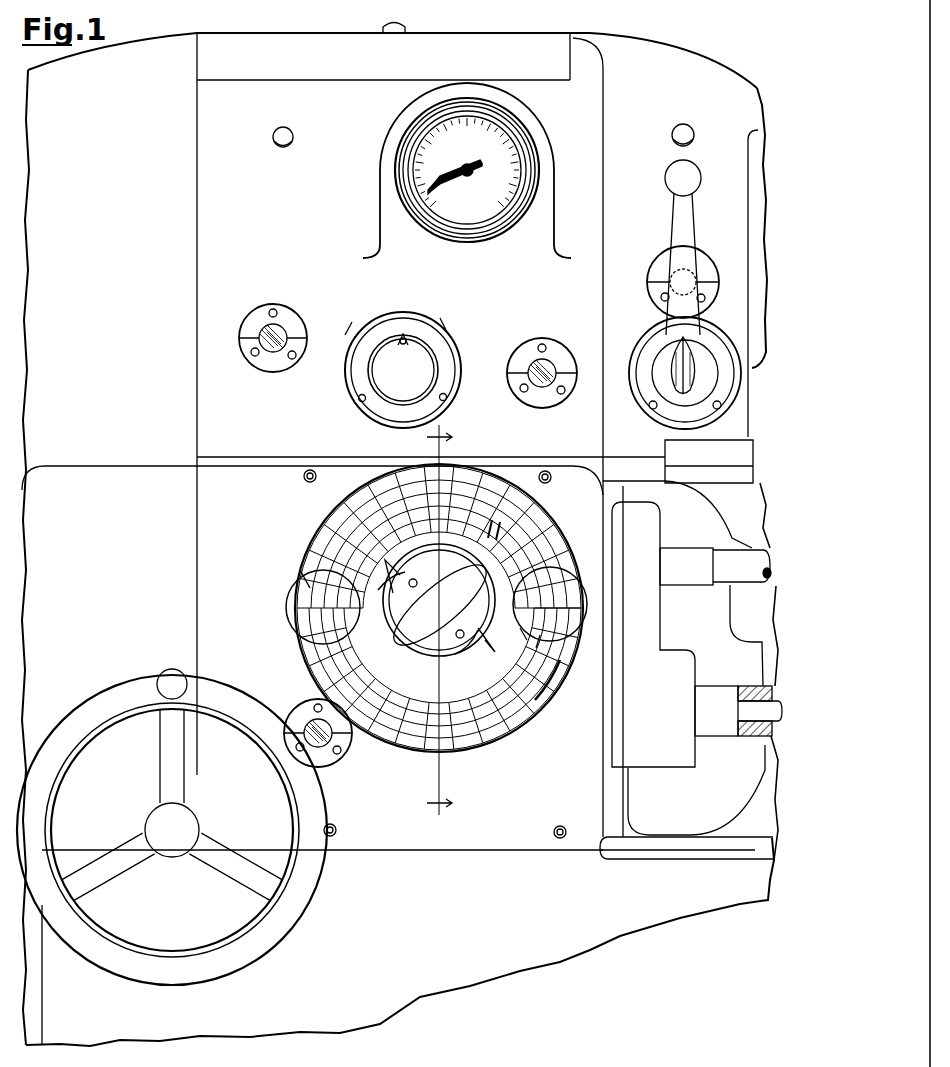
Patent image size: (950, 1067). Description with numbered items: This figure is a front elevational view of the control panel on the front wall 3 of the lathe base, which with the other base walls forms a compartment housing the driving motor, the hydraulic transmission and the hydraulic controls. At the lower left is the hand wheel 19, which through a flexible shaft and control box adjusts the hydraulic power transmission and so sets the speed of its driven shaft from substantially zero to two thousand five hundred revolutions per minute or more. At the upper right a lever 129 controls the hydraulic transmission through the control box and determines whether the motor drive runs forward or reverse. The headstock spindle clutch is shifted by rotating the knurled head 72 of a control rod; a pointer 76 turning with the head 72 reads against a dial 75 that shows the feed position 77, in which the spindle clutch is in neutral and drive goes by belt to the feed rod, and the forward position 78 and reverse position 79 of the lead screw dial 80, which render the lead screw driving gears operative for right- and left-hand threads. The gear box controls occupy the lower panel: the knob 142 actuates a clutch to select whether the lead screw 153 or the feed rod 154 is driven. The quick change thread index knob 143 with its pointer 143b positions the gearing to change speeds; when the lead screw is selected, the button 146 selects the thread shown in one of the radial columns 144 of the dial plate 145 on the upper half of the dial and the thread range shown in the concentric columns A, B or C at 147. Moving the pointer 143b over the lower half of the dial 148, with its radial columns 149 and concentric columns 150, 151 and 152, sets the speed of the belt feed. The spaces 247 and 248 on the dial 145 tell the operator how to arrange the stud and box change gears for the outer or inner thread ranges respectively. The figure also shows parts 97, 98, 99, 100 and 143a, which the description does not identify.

The front wall 3 is at (461, 940).
The hand wheel 19 is at (302, 893).
The knurled head 72 is at (408, 378).
The dial 75 is at (448, 360).
The pointer 76 is at (414, 348).
The feed position 77 is at (406, 340).
The forward position 78 is at (455, 380).
The reverse position 79 is at (371, 365).
The lead screw dial 80 is at (413, 429).
The gauge bezel 97 is at (522, 226).
The gauge glass face 98 is at (474, 224).
The gauge inner ring 99 is at (426, 226).
The gauge scale and needle 100 is at (417, 196).
The lever 129 is at (686, 212).
The knob 142 is at (578, 588).
The quick change thread index knob 143 is at (462, 604).
The lever arm upper end 143a is at (378, 590).
The pointer 143b is at (459, 651).
The radial columns 144 is at (340, 506).
The dial plate 145 is at (362, 487).
The button 146 is at (292, 599).
The concentric columns 147 is at (318, 561).
The lower half of the dial 148 is at (509, 726).
The radial columns 149 is at (486, 746).
The concentric column 150 is at (560, 660).
The concentric column 151 is at (544, 622).
The concentric column 152 is at (533, 626).
The lead screw 153 is at (715, 572).
The feed rod 154 is at (745, 718).
The space 247 is at (500, 522).
The space 248 is at (492, 520).